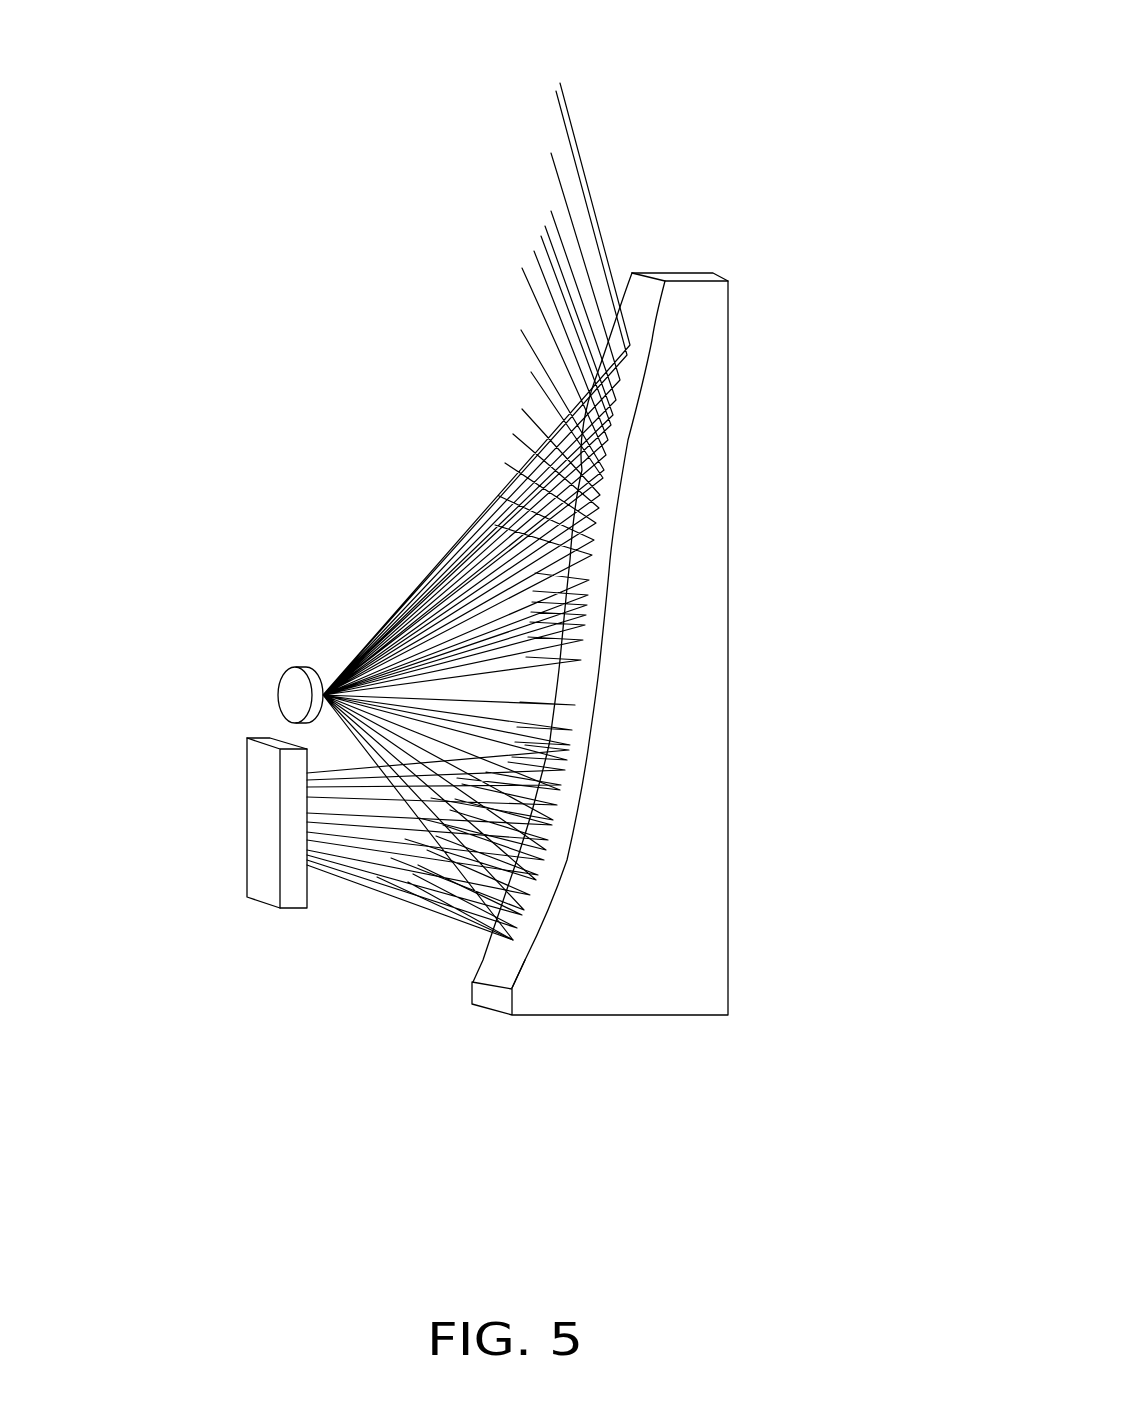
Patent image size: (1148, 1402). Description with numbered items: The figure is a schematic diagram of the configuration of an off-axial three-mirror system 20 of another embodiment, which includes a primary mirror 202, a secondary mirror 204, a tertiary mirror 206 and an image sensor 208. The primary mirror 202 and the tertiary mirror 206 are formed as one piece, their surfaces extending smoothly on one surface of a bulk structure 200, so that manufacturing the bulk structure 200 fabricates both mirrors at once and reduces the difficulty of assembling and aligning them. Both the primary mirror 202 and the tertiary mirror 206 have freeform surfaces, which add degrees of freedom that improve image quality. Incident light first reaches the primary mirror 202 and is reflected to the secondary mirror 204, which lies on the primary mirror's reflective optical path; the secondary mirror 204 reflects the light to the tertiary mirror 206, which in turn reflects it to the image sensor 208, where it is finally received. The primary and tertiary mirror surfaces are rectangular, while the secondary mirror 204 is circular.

The off-axial three-mirror system 20 is at (418, 74).
The bulk structure 200 is at (683, 765).
The primary mirror 202 is at (634, 385).
The secondary mirror 204 is at (295, 695).
The tertiary mirror 206 is at (522, 947).
The image sensor 208 is at (262, 830).